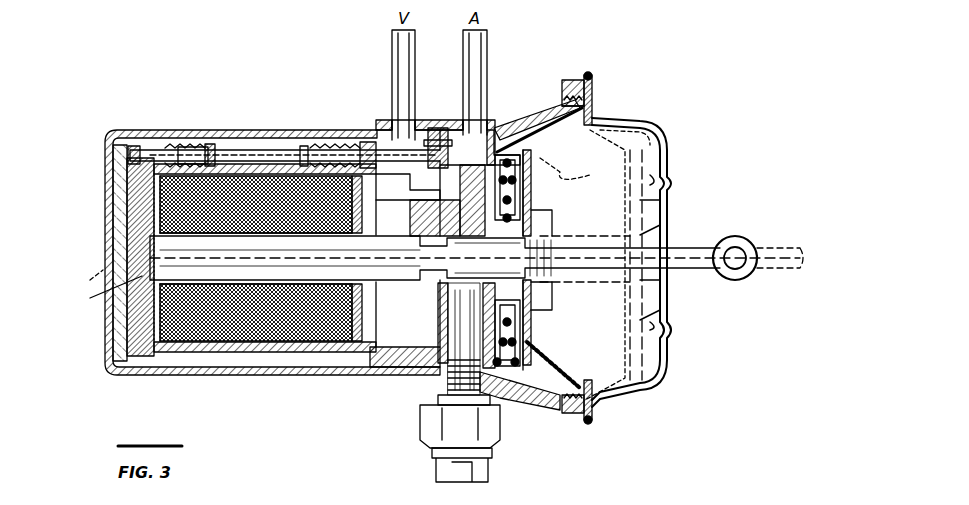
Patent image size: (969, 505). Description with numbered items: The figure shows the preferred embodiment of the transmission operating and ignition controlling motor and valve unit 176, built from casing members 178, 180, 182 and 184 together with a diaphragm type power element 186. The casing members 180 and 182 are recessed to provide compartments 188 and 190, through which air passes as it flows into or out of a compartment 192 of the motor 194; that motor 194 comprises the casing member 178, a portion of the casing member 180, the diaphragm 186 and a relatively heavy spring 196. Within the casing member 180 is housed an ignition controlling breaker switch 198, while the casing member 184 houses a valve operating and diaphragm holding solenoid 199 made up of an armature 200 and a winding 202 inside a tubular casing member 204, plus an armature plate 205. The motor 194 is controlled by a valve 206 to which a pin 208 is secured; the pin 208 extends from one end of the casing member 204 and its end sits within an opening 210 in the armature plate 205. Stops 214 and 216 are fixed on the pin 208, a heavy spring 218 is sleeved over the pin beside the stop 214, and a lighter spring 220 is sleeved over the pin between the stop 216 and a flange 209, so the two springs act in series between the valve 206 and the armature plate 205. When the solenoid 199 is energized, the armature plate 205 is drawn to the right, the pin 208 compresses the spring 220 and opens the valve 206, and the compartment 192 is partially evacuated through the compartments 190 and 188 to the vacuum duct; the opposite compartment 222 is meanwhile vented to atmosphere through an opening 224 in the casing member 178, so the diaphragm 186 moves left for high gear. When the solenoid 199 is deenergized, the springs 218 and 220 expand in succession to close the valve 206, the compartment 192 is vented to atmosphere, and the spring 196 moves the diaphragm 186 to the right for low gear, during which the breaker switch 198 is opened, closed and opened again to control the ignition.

The transmission operating and ignition controlling motor and valve unit 176 is at (283, 76).
The casing member 178 is at (630, 127).
The casing member 180 is at (518, 140).
The casing member 182 is at (402, 366).
The casing member 184 is at (120, 403).
The diaphragm 186 is at (640, 326).
The compartment 188 is at (486, 148).
The compartment 190 is at (430, 192).
The compartment 192 is at (540, 378).
The motor 194 is at (643, 390).
The spring 196 is at (568, 163).
The breaker switch 198 is at (437, 384).
The solenoid 199 is at (104, 200).
The armature 200 is at (225, 367).
The winding 202 is at (283, 367).
The tubular casing member 204 is at (186, 352).
The armature plate 205 is at (90, 298).
The valve 206 is at (452, 140).
The pin 208 is at (256, 159).
The flange 209 is at (366, 142).
The opening 210 is at (136, 142).
The stop 214 is at (184, 148).
The stop 216 is at (306, 146).
The spring 218 is at (192, 146).
The spring 220 is at (332, 148).
The compartment 222 is at (646, 166).
The opening 224 is at (617, 383).